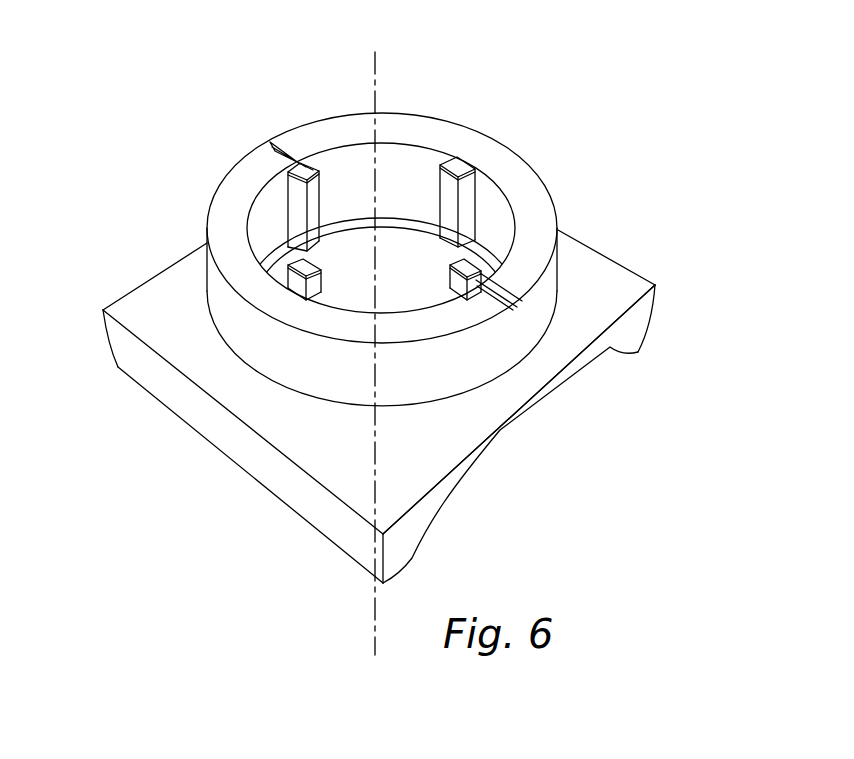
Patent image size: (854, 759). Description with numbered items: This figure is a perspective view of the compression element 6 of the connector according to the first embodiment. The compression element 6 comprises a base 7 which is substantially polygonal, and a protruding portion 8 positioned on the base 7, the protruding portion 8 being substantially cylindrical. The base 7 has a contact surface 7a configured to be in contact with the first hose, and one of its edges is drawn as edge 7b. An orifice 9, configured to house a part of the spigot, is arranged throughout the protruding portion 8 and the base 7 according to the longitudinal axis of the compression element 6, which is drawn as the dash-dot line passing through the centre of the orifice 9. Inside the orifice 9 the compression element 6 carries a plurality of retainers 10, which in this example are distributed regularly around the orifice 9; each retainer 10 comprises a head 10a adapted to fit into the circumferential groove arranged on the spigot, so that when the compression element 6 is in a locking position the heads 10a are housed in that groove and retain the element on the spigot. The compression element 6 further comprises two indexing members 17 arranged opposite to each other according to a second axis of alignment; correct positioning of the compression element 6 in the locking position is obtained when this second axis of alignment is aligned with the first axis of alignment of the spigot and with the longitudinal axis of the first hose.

The compression element 6 is at (399, 341).
The base 7 is at (618, 290).
The contact surface 7a is at (437, 513).
The top edge of base plate 7b is at (528, 402).
The protruding portion 8 is at (228, 230).
The orifice 9 is at (402, 262).
The retainer 10 is at (258, 194).
The head 10a is at (460, 163).
The indexing member 17 is at (270, 141).